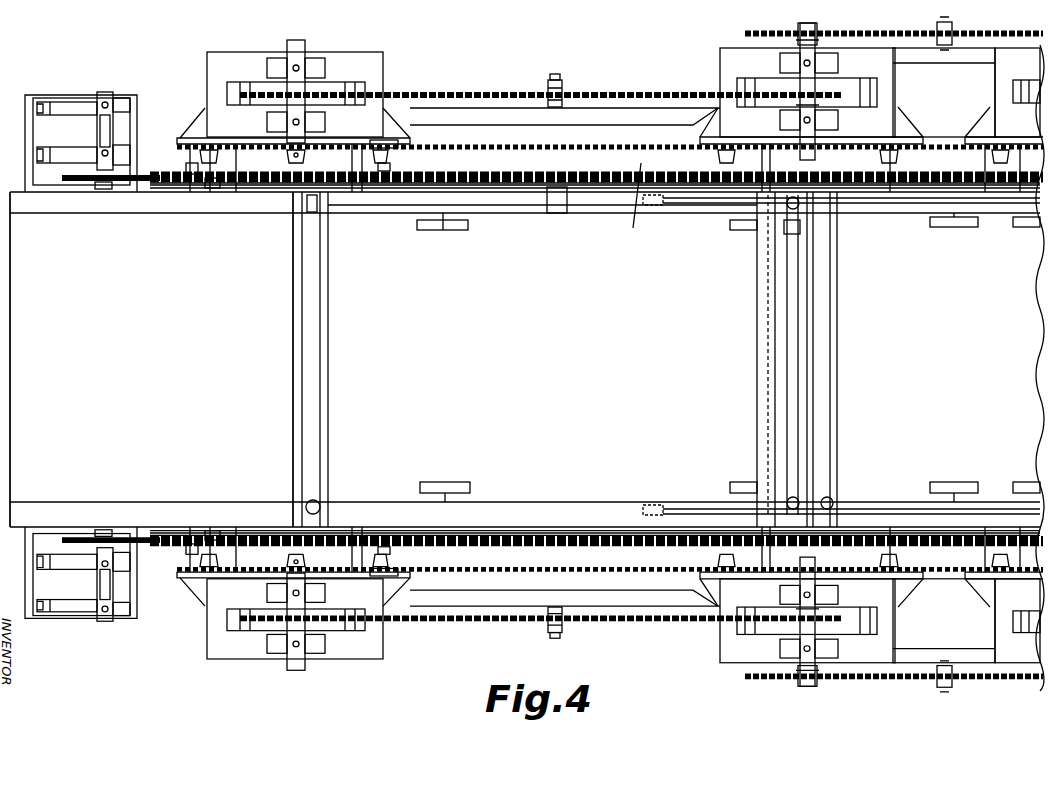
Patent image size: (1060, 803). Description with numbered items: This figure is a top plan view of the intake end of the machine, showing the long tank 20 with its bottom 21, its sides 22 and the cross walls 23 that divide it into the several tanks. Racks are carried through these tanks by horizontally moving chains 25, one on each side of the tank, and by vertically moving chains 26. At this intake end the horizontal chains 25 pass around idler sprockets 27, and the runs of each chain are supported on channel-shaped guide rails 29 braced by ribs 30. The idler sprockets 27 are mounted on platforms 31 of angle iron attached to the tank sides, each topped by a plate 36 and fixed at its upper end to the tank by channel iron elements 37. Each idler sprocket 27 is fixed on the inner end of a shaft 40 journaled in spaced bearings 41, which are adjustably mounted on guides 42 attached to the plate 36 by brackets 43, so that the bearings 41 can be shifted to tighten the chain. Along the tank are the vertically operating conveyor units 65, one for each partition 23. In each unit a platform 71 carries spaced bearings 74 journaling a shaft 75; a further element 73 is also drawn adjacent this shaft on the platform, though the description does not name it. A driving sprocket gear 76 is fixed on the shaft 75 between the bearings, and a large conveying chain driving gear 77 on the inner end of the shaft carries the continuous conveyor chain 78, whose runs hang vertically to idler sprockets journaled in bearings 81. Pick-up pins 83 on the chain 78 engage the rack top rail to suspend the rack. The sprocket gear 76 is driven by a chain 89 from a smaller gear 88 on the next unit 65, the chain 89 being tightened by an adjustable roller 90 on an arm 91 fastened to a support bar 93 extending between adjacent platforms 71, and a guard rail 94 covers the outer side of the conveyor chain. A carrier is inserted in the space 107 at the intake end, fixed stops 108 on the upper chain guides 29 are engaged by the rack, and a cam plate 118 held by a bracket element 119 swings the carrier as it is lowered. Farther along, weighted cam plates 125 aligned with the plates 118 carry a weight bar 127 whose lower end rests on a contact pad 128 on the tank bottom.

The tank 20 is at (598, 190).
The bottom 21 is at (612, 240).
The sides 22 is at (525, 192).
The cross walls 23 is at (293, 410).
The horizontally moving chains 25 is at (512, 185).
The vertically moving chains 26 is at (235, 138).
The idler sprockets 27 is at (100, 190).
The channel-shaped guide rails 29 is at (533, 172).
The ribs 30 is at (442, 176).
The platforms 31 is at (132, 97).
The plate 36 is at (125, 125).
The channel iron elements 37 is at (138, 102).
The shaft 40 is at (100, 130).
The bearings 41 is at (102, 97).
The guides 42 is at (68, 110).
The brackets 43 is at (42, 103).
The vertically operating conveyor units 65 is at (178, 150).
The platform 71 is at (350, 62).
The vertical shaft 73 is at (296, 48).
The bearings 74 is at (278, 62).
The shaft 75 is at (325, 650).
The driving sprocket gear 76 is at (282, 100).
The conveying chain driving gear 77 is at (287, 158).
The conveyor chain 78 is at (392, 148).
The bearings 81 is at (400, 150).
The pick-up pins 83 is at (188, 176).
The smaller gear 88 is at (815, 100).
The chain 89 is at (466, 78).
The adjustable roller 90 is at (566, 91).
The arm 91 is at (555, 76).
The support bar 93 is at (620, 118).
The guard rail 94 is at (196, 126).
The space 107 is at (151, 359).
The fixed stops 108 is at (216, 186).
The cam plate 118 is at (432, 230).
The bracket element 119 is at (445, 225).
The weighted cam plates 125 is at (745, 228).
The weight bar 127 is at (700, 203).
The contact pad 128 is at (645, 205).